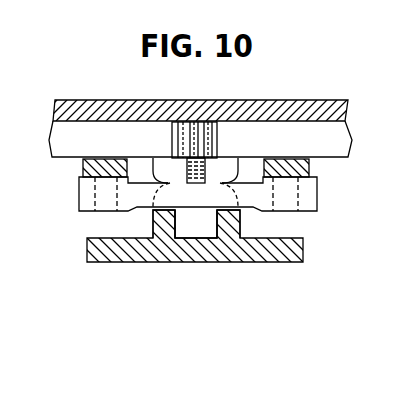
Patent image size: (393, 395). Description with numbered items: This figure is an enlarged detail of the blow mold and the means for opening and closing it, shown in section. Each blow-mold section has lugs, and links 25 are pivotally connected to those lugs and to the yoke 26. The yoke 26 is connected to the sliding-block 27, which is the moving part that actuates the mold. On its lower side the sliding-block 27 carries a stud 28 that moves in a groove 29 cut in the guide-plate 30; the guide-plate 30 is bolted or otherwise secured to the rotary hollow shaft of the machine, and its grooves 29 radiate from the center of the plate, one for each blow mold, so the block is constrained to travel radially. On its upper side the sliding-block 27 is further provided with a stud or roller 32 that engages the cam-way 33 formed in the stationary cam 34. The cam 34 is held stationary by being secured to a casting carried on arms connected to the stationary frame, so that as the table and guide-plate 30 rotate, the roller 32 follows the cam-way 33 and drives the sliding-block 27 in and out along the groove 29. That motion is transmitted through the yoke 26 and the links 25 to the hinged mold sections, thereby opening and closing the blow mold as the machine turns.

The links 25 is at (322, 169).
The yoke 26 is at (123, 192).
The sliding-block 27 is at (160, 172).
The stud 28 is at (192, 226).
The groove 29 is at (220, 223).
The guide-plate 30 is at (260, 253).
The stud or roller 32 is at (217, 137).
The cam-way 33 is at (200, 139).
The stationary cam 34 is at (120, 90).